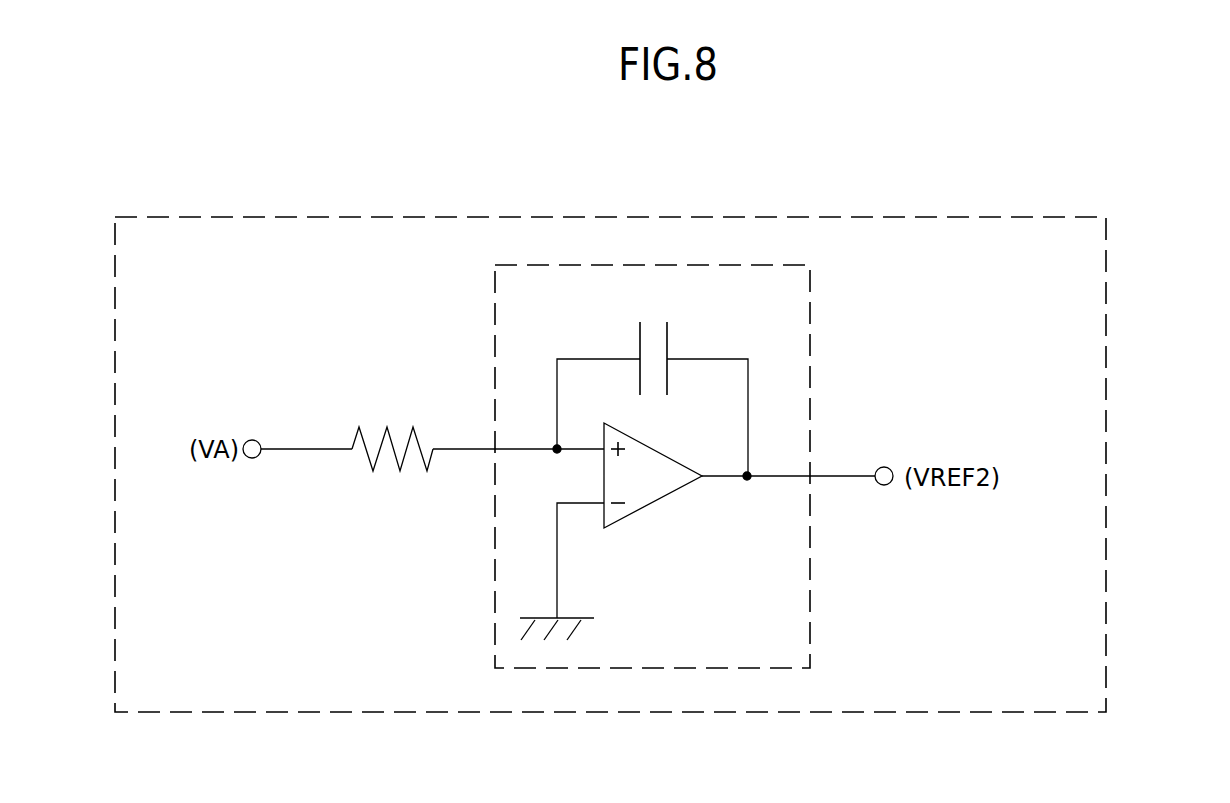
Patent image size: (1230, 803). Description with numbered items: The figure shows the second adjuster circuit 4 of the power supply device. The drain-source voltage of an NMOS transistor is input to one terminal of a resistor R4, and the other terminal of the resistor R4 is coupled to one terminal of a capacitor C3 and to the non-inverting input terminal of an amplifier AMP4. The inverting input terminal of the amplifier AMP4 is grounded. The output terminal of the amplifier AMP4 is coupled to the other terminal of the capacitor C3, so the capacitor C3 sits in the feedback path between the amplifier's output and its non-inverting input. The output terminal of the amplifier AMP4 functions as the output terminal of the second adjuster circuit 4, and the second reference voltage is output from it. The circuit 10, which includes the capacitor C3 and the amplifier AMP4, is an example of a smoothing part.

The second adjuster circuit 4 is at (1106, 288).
The circuit 10 is at (810, 334).
The resistor R4 is at (392, 433).
The capacitor C3 is at (652, 382).
The amplifier AMP4 is at (653, 493).